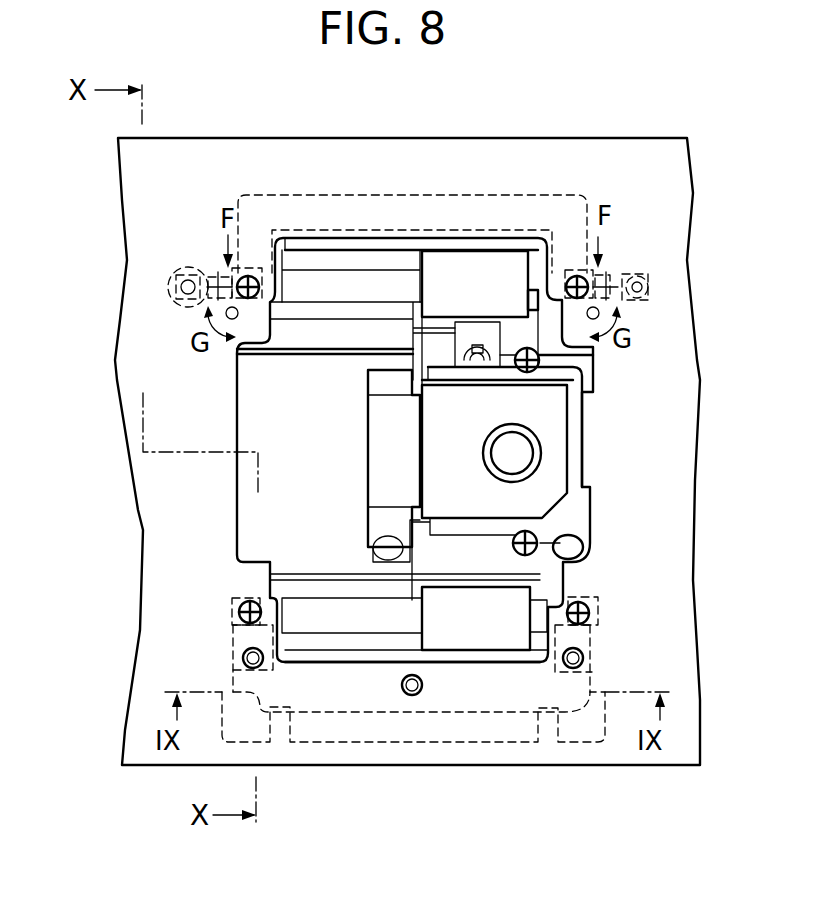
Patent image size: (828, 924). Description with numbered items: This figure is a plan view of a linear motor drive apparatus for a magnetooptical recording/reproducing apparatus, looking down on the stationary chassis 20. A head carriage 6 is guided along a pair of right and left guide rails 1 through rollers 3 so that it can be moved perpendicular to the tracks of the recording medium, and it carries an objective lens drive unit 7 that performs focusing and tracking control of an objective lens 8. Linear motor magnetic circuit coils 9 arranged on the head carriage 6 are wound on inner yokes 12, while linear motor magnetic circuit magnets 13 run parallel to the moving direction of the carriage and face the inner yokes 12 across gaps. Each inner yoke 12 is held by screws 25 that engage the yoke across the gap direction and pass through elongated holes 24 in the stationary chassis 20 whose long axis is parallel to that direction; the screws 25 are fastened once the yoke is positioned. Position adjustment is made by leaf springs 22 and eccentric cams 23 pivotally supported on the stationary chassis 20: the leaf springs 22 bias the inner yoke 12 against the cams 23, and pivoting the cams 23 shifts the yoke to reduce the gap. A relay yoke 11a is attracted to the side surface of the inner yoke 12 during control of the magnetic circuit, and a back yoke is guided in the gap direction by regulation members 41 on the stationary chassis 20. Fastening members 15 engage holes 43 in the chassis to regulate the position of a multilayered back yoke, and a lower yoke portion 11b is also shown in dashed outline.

The guide rail 1 is at (333, 562).
The roller 3 is at (570, 537).
The head carriage 6 is at (372, 425).
The objective lens drive unit 7 is at (553, 410).
The objective lens 8 is at (500, 460).
The linear motor magnetic circuit coil 9 is at (485, 262).
The relay yoke 11a is at (400, 200).
The lower guide portion 11b is at (345, 720).
The inner yoke 12 is at (340, 282).
The linear motor magnetic circuit magnet 13 is at (440, 240).
The fastening member 15 is at (408, 695).
The stationary chassis 20 is at (128, 262).
The leaf spring 22 is at (218, 277).
The eccentric cam 23 is at (205, 313).
The elongated hole 24 is at (423, 387).
The screw 25 is at (248, 276).
The regulation member 41 is at (230, 676).
The hole 43 is at (418, 690).